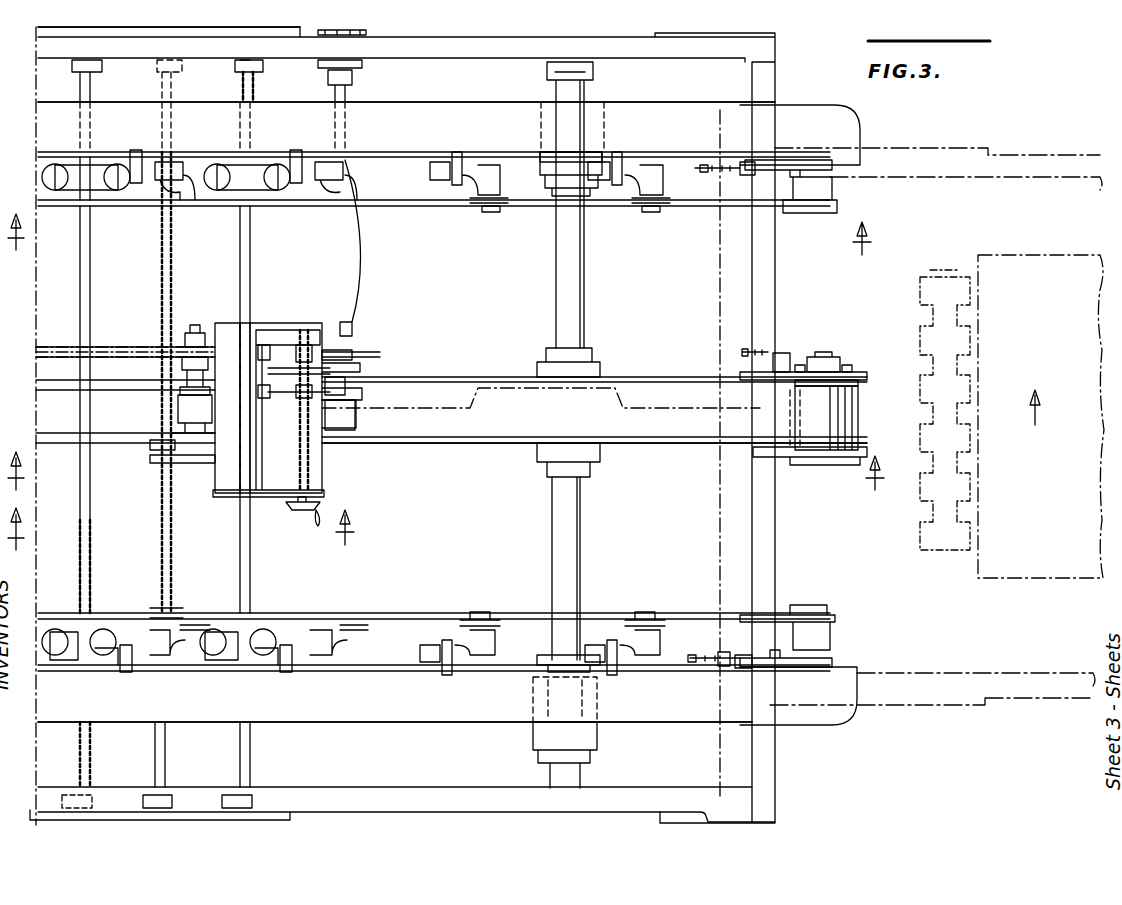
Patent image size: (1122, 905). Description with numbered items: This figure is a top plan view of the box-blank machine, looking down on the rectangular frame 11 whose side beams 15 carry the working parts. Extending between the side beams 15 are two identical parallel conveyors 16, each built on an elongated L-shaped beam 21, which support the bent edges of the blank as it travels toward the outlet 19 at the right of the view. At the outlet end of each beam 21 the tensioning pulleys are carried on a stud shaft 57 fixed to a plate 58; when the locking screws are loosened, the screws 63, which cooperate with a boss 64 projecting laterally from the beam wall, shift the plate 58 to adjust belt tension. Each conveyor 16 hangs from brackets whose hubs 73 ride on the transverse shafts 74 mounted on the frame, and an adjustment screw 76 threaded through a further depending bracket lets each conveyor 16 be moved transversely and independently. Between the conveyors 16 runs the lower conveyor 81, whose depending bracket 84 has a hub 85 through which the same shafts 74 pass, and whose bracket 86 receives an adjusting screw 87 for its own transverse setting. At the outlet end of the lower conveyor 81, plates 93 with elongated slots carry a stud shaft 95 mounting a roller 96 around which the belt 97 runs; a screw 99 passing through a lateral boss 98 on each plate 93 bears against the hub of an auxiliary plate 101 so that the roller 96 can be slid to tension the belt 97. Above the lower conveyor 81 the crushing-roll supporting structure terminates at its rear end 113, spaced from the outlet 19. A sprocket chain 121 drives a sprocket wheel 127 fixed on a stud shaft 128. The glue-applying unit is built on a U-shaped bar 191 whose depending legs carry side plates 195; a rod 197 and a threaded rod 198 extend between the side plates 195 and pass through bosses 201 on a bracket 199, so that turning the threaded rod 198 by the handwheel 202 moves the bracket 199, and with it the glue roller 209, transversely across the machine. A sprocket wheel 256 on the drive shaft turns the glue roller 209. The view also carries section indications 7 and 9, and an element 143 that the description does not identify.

The section line 7- 7 is at (351, 528).
The section line 9- 9 is at (443, 236).
The frame 11 is at (458, 501).
The side beam 15 is at (648, 57).
The conveyor 16 is at (402, 82).
The outlet 19 is at (860, 415).
The L-shaped beam 21 is at (500, 112).
The stud shaft 57 is at (818, 213).
The plate 58 is at (790, 165).
The screw 63 is at (726, 660).
The boss 64 is at (712, 660).
The hub 73 is at (560, 182).
The shaft 74 is at (586, 284).
The adjustment screw 76 is at (90, 548).
The lower conveyor 81 is at (485, 362).
The bracket 84 is at (604, 370).
The hub 85 is at (582, 515).
The bracket 86 is at (148, 452).
The adjusting screw 87 is at (170, 545).
The plate 93 is at (775, 450).
The stud shaft 95 is at (832, 352).
The roller 96 is at (852, 383).
The belt 97 is at (684, 443).
The lateral boss 98 is at (782, 355).
The screw 99 is at (748, 370).
The auxiliary plate 101 is at (850, 375).
The rear end 113 is at (408, 377).
The sprocket chain 121 is at (116, 345).
The sprocket wheel 127 is at (188, 345).
The stud shaft 128 is at (200, 325).
The support block 143 is at (180, 418).
The U-shaped bar 191 is at (245, 340).
The side plate 195 is at (268, 358).
The rod 197 is at (300, 368).
The threaded rod 198 is at (312, 473).
The bracket 199 is at (355, 377).
The boss 201 is at (362, 395).
The handwheel 202 is at (298, 515).
The glue roller 209 is at (362, 420).
The sprocket wheel 256 is at (365, 33).